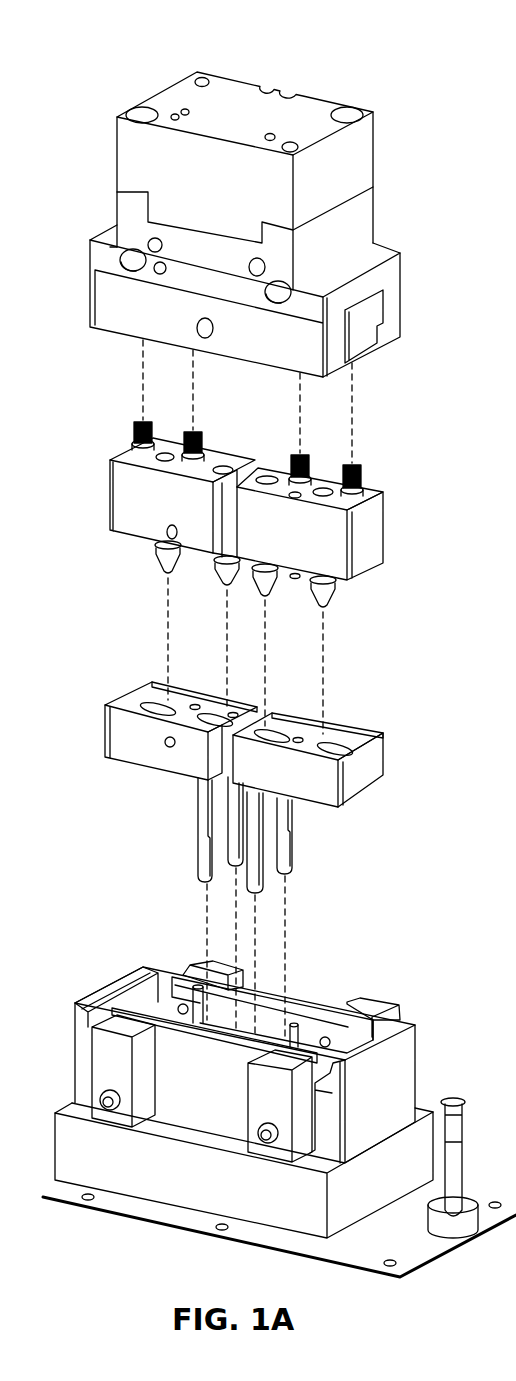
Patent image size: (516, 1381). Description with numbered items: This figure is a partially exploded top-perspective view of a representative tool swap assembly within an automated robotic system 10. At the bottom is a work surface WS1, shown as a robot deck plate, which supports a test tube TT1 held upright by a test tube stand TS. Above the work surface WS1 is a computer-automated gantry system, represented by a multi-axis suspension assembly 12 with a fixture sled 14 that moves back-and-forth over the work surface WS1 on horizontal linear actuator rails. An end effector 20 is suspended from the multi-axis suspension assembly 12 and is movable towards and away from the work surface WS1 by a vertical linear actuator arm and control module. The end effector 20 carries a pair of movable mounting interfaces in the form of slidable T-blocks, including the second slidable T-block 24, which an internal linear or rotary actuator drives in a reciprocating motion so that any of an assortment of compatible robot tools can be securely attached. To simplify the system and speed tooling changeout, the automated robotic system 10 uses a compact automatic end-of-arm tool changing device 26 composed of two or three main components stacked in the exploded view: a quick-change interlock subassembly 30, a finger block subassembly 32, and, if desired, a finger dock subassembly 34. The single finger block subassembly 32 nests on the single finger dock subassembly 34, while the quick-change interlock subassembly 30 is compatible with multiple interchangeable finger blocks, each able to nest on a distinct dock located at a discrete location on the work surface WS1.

The automated robotic system 10 is at (134, 74).
The multi-axis suspension assembly 12 is at (282, 276).
The fixture sled 14 is at (132, 146).
The end effector 20 is at (130, 350).
The second slidable T-block 24 is at (360, 343).
The automatic end-of-arm tool changing device 26 is at (456, 467).
The quick-change interlock subassembly 30 is at (133, 555).
The finger block subassembly 32 is at (132, 780).
The finger dock subassembly 34 is at (95, 971).
The work surface WS1 is at (160, 1213).
The test tube TT1 is at (463, 1127).
The test tube stand TS is at (478, 1203).